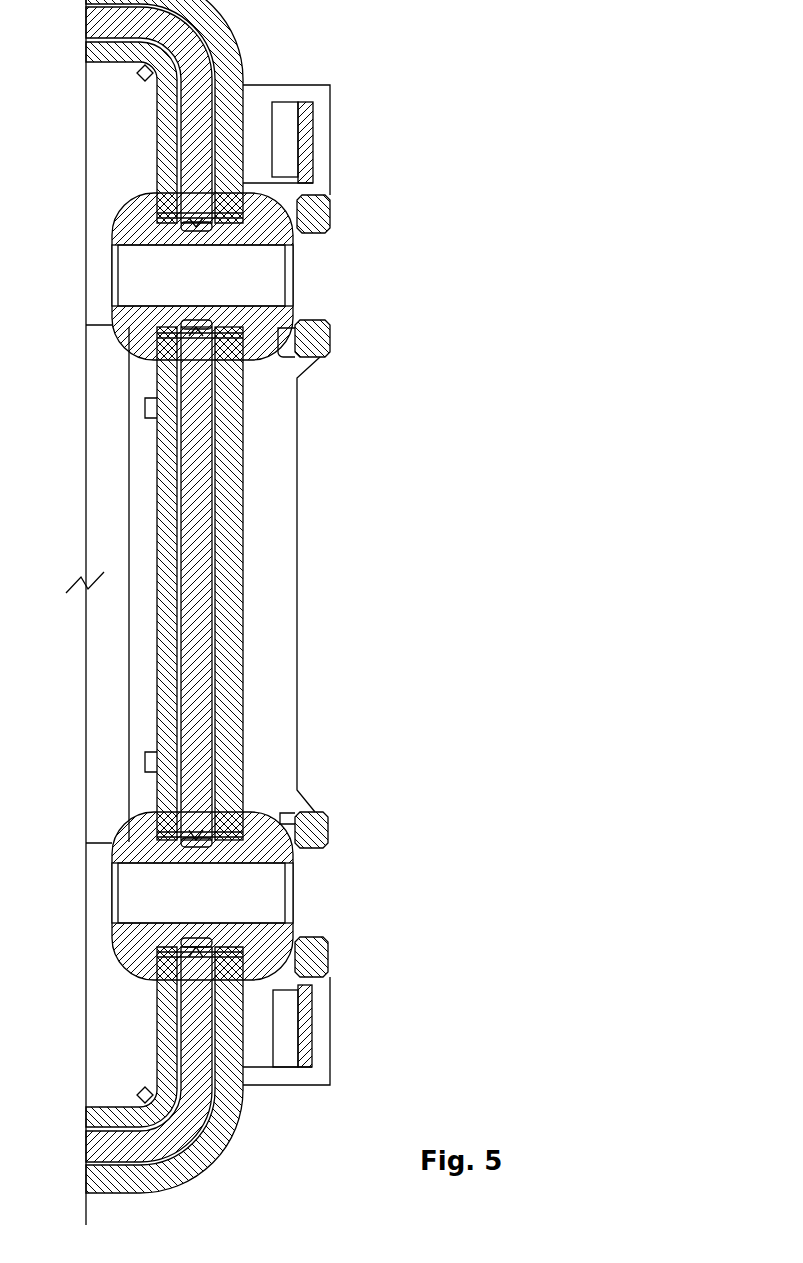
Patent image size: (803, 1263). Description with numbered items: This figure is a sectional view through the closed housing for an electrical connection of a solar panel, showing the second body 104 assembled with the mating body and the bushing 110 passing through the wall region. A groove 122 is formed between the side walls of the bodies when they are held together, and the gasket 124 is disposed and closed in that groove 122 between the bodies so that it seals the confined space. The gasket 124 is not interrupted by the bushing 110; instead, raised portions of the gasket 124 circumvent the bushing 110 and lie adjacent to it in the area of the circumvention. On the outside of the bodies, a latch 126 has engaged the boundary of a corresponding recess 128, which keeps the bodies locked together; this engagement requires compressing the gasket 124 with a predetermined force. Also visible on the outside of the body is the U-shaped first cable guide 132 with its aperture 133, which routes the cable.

The second body 104 is at (98, 1065).
The bushing 110 is at (268, 257).
The groove 122 is at (215, 483).
The gasket 124 is at (192, 511).
The latch 126 is at (286, 127).
The recess 128 is at (257, 134).
The first cable guide 132 is at (320, 207).
The aperture 133 is at (299, 293).